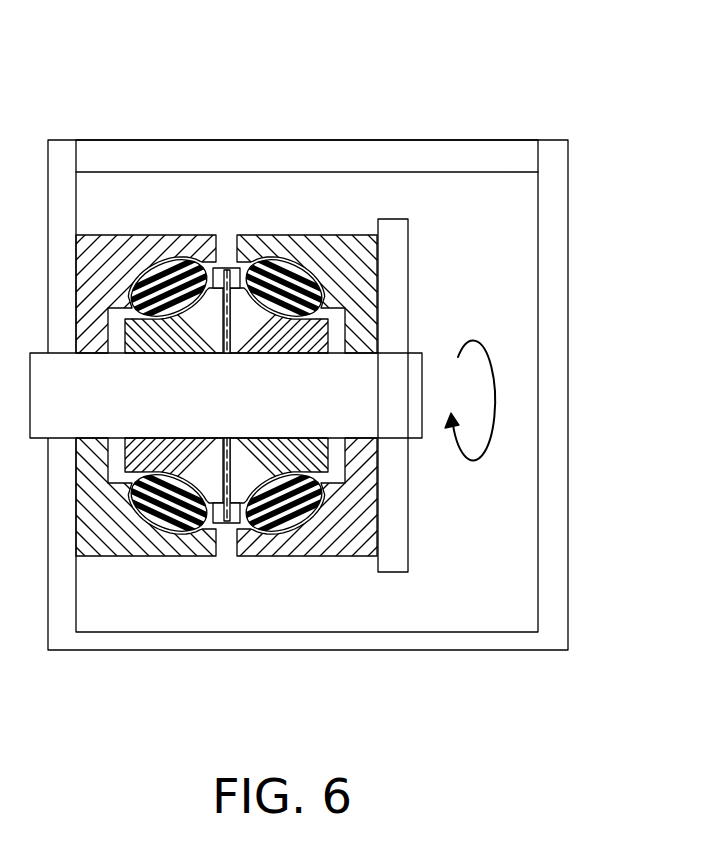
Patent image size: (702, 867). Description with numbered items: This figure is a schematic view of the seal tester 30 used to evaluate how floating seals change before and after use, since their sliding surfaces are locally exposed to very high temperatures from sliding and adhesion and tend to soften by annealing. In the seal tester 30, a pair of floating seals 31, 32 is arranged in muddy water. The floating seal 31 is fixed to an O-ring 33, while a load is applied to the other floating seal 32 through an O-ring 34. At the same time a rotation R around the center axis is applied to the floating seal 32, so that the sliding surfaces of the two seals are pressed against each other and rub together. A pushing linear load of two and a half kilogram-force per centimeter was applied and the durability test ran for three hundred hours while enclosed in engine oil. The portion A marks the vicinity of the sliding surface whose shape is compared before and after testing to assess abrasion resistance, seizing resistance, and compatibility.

The seal tester 30 is at (254, 304).
The floating seal 31 is at (188, 327).
The floating seal 32 is at (303, 340).
The O-ring 33 is at (155, 280).
The O-ring 34 is at (288, 268).
The portion A is at (233, 262).
The rotation R is at (476, 455).